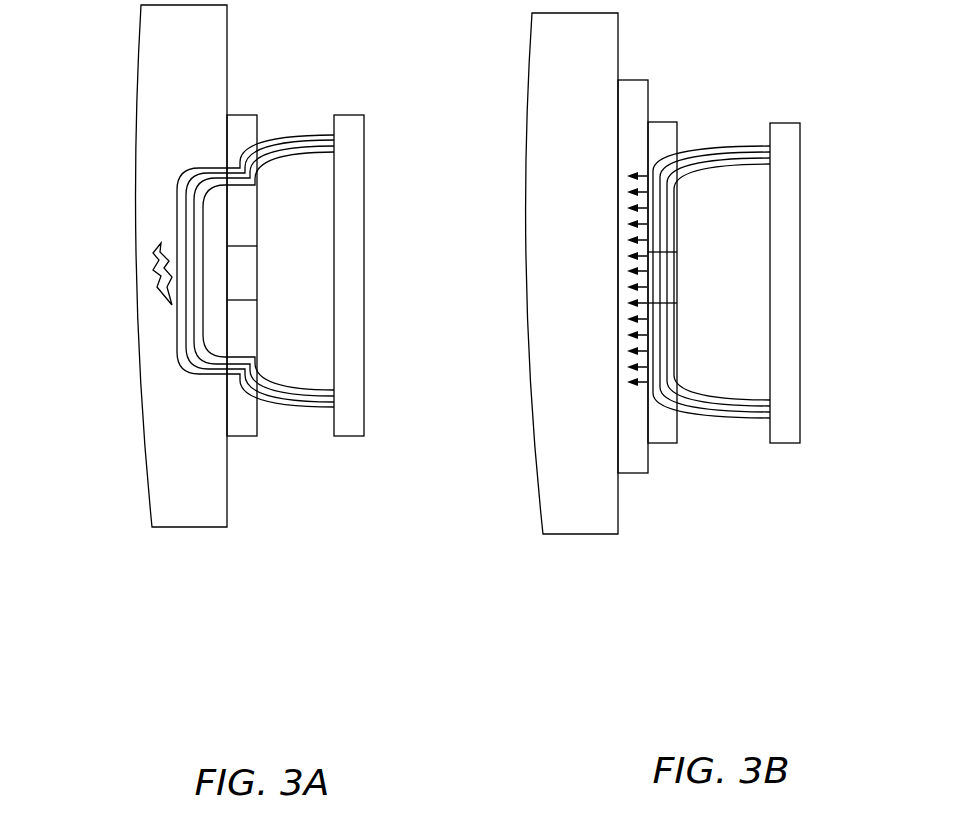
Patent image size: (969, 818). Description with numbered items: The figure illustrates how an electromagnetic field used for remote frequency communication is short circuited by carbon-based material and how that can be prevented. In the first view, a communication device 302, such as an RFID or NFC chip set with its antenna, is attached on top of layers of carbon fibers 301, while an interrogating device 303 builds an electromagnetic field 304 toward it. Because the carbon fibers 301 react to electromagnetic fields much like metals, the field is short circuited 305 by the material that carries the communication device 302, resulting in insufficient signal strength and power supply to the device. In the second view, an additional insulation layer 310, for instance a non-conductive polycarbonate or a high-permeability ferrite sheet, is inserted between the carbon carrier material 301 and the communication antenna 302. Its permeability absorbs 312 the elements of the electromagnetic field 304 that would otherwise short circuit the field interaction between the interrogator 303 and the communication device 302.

In FIG. 3A, the carbon fibers 301 is at (186, 537).
In FIG. 3B, the carbon fibers 301 is at (603, 545).
In FIG. 3A, the communication device 302 is at (253, 443).
In FIG. 3B, the communication device 302 is at (682, 450).
In FIG. 3A, the interrogating device 303 is at (367, 443).
In FIG. 3B, the interrogating device 303 is at (810, 450).
In FIG. 3A, the electromagnetic field 304 is at (302, 128).
In FIG. 3B, the electromagnetic field 304 is at (760, 138).
In FIG. 3A, the short circuiting 305 is at (170, 206).
In FIG. 3B, the insulation layer 310 is at (703, 244).
In FIG. 3B, the absorption 312 is at (625, 240).